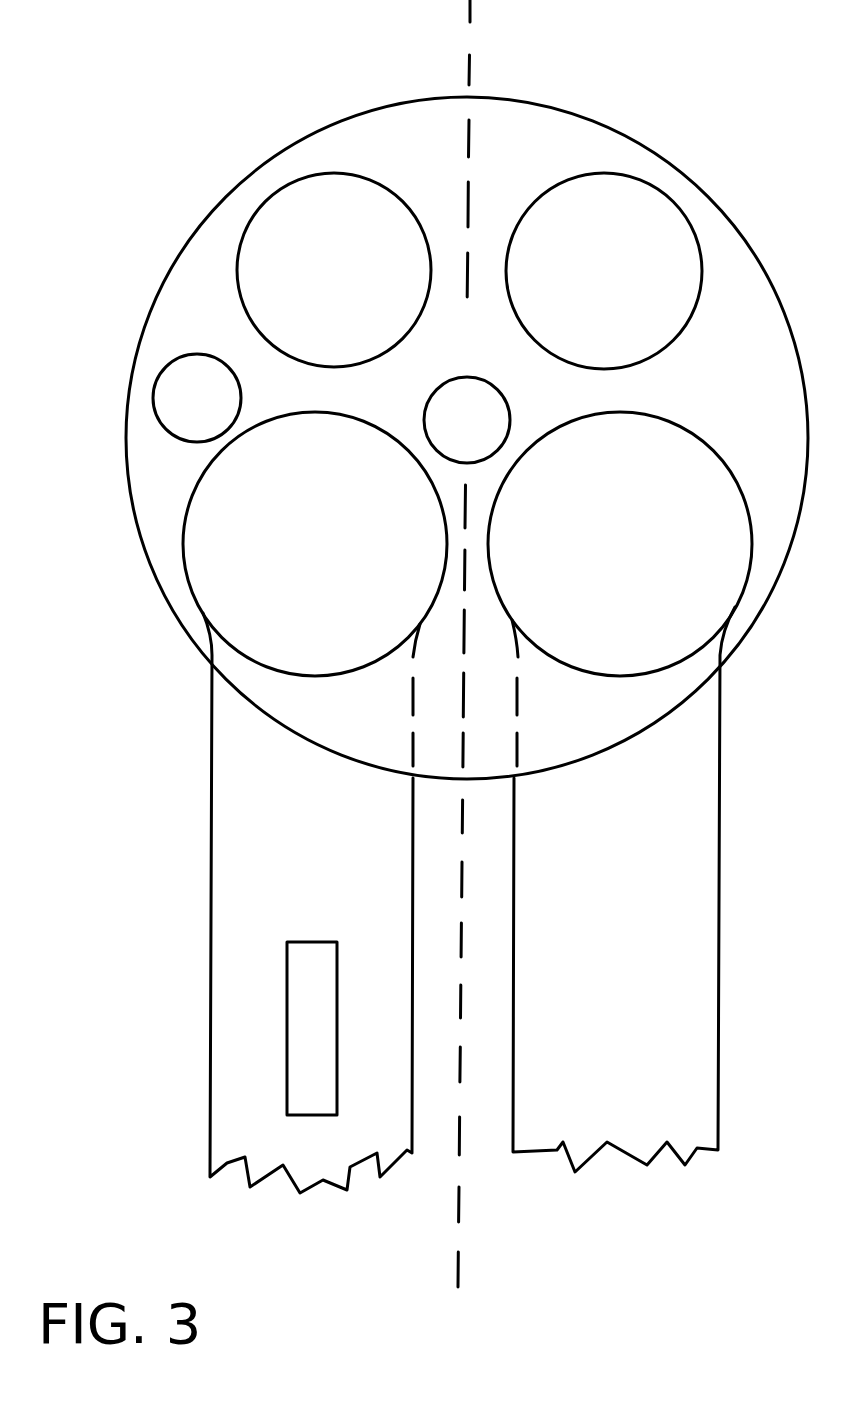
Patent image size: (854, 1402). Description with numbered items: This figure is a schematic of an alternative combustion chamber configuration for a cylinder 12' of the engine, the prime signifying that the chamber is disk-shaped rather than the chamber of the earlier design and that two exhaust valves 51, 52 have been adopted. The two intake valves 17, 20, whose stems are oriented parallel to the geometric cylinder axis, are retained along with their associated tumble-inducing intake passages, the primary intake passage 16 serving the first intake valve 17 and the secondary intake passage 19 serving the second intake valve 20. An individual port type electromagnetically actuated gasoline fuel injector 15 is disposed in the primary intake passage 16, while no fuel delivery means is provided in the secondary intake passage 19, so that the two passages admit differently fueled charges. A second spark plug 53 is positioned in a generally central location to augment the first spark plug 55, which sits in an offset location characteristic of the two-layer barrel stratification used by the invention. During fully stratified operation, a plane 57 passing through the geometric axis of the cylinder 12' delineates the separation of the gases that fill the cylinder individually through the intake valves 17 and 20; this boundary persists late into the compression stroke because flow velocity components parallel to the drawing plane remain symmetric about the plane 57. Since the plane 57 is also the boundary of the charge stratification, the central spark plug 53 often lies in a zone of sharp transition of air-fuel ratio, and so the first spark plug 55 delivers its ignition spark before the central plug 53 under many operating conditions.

The cylinder 12' is at (467, 428).
The exhaust valve 51 is at (358, 272).
The exhaust valve 52 is at (625, 272).
The second spark plug 53 is at (488, 377).
The first spark plug 55 is at (228, 357).
The first intake valve 17 is at (355, 542).
The second intake valve 20 is at (660, 542).
The primary intake passage 16 is at (285, 851).
The secondary intake passage 19 is at (680, 853).
The fuel injector 15 is at (324, 940).
The plane 57 is at (459, 1207).